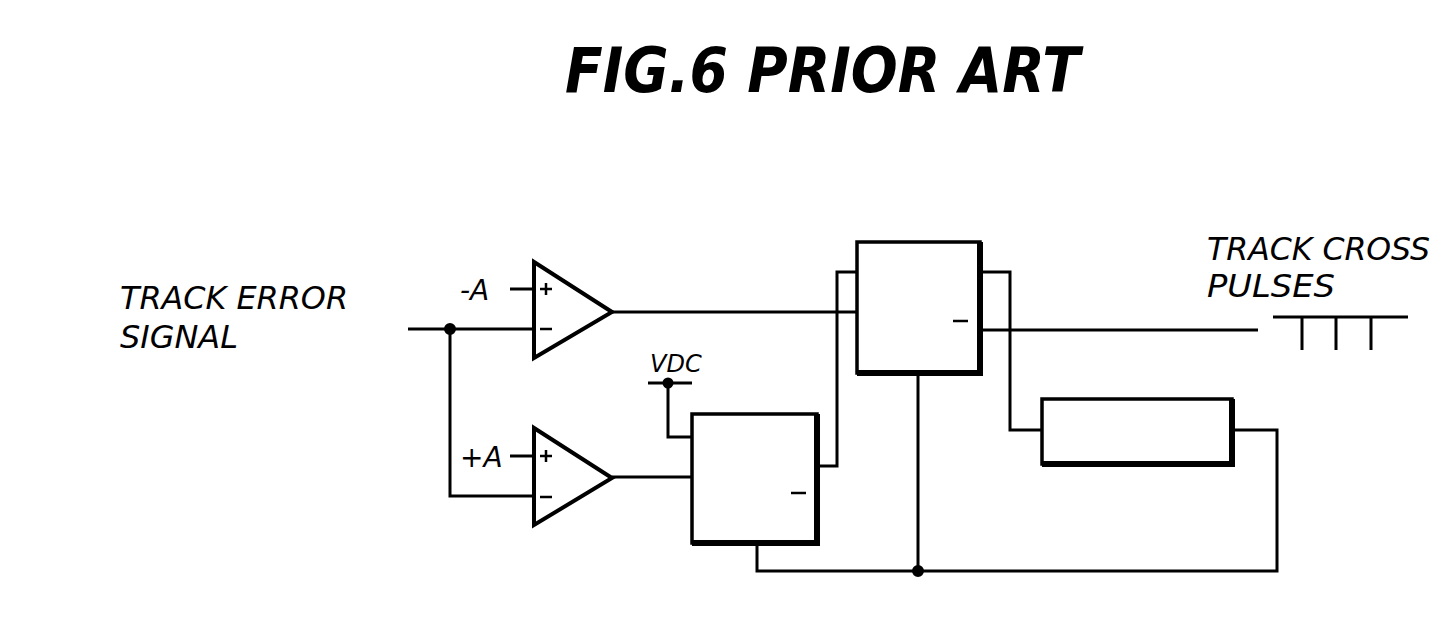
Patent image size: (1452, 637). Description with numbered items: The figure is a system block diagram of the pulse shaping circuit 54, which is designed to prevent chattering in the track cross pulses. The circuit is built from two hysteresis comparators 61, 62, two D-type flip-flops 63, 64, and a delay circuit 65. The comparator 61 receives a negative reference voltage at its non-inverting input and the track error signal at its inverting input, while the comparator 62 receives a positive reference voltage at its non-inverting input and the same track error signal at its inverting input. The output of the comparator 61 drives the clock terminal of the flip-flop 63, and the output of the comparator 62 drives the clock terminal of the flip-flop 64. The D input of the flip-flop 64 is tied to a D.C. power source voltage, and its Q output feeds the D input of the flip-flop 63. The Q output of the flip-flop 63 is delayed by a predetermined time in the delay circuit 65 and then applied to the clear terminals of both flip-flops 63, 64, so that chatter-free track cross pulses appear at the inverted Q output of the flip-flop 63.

The pulse shaping circuit 54 is at (736, 208).
The hysteresis comparator 61 is at (572, 284).
The hysteresis comparator 62 is at (566, 447).
The D-type flip-flop 63 is at (968, 242).
The D-type flip-flop 64 is at (752, 414).
The delay circuit 65 is at (1122, 399).